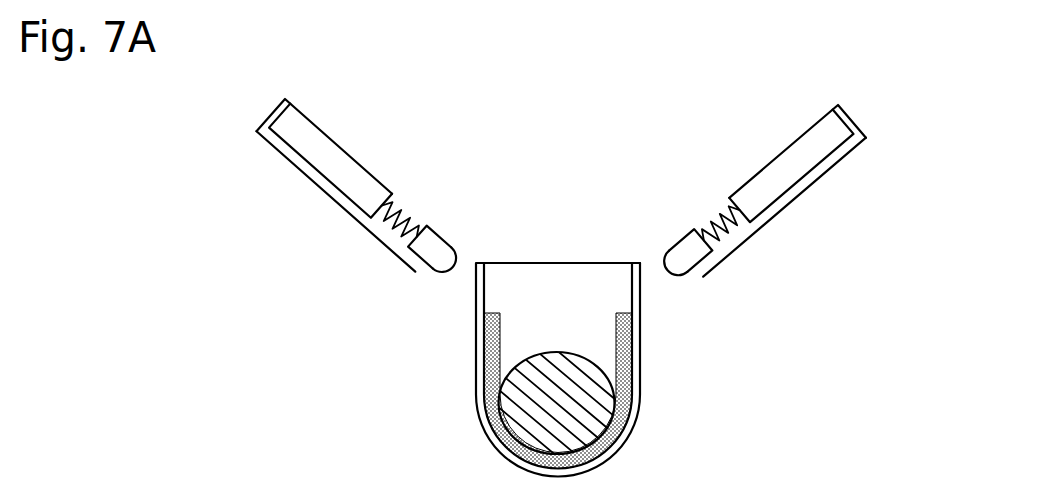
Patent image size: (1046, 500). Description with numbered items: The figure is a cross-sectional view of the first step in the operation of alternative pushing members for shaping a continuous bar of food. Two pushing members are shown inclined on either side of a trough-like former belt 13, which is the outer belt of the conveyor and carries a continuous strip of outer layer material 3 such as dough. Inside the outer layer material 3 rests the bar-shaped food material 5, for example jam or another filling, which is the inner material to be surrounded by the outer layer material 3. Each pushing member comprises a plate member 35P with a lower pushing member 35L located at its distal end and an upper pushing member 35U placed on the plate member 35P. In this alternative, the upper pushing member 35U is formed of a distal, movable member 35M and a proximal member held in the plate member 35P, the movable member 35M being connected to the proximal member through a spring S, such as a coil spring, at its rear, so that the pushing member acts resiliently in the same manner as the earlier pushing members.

The outer layer material 3 is at (500, 323).
The food material 5 is at (555, 355).
The former belt 13 is at (640, 397).
The plate member 35P is at (330, 191).
The lower pushing member 35L is at (421, 276).
The distal, movable member 35M is at (447, 242).
The upper pushing member 35U is at (458, 277).
The spring S is at (409, 232).